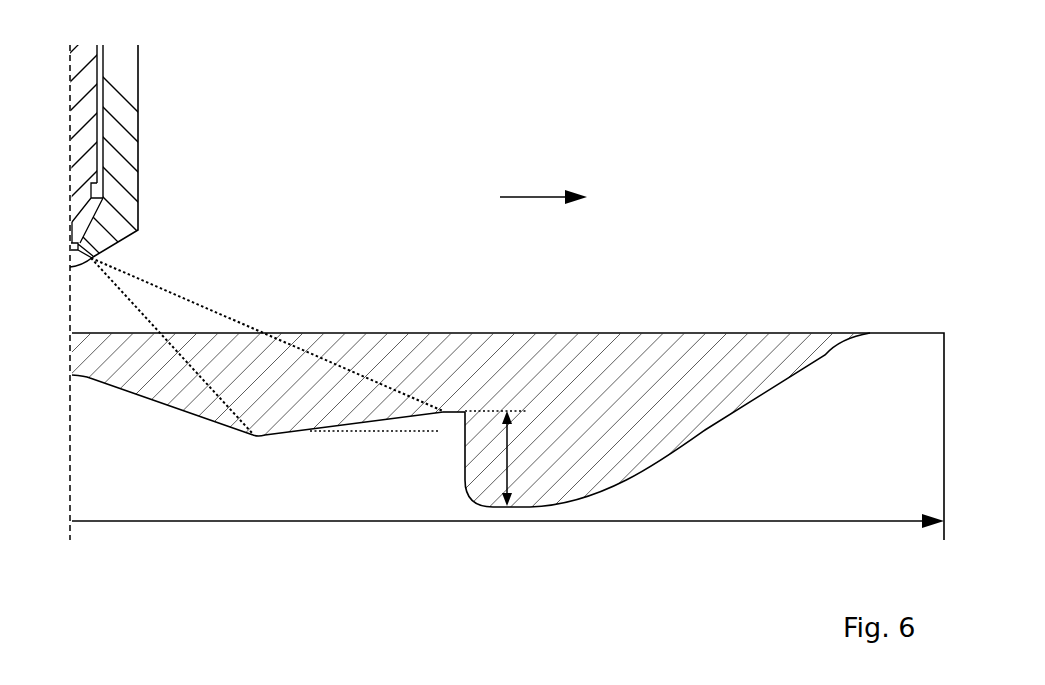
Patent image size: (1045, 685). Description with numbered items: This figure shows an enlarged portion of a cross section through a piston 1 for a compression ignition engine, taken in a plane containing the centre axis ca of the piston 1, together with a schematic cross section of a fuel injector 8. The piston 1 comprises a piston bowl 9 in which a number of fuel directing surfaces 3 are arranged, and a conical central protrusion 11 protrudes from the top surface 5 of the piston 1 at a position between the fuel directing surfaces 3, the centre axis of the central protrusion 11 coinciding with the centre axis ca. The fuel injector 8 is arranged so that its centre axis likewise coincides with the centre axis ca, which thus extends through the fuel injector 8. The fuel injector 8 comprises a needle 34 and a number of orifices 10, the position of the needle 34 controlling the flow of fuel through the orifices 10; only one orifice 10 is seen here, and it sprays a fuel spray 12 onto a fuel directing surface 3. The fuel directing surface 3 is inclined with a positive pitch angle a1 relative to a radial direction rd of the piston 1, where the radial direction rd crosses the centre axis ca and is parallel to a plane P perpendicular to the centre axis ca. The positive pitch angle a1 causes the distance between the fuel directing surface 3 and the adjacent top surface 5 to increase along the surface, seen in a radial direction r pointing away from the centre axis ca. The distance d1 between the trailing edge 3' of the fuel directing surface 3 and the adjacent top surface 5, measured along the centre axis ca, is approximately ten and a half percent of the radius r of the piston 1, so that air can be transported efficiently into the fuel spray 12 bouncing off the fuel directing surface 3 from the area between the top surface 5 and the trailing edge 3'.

The piston 1 is at (900, 355).
The fuel directing surface 3 is at (348, 360).
The trailing edge 3' is at (462, 348).
The top surface 5 is at (521, 507).
The fuel injector 8 is at (128, 111).
The piston bowl 9 is at (615, 395).
The orifice 10 is at (97, 258).
The central protrusion 11 is at (128, 402).
The fuel spray 12 is at (202, 303).
The needle 34 is at (78, 218).
The positive pitch angle a1 is at (342, 428).
The plane P is at (405, 431).
The distance d1 is at (508, 452).
The radius r is at (778, 519).
The radial direction rd is at (538, 195).
The centre axis ca is at (70, 475).